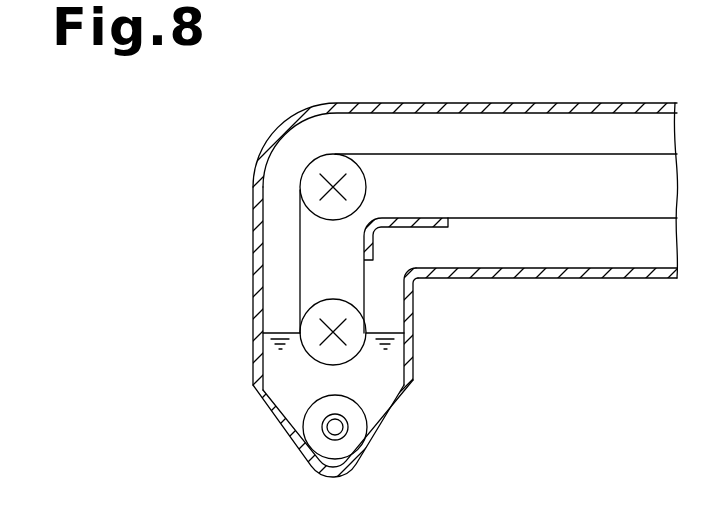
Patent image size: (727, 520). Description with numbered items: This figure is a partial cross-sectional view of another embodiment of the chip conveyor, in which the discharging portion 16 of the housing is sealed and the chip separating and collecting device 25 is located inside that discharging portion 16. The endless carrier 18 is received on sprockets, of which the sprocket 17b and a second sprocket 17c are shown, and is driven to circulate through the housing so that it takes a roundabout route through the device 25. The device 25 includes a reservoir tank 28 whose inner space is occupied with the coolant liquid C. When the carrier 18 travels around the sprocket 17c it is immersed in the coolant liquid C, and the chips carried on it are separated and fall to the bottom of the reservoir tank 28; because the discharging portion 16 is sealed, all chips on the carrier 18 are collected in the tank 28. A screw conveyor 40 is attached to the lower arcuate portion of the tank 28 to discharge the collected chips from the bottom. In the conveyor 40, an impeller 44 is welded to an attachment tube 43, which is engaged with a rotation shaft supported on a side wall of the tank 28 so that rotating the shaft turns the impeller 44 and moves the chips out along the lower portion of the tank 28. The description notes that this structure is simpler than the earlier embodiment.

The discharging portion 16 is at (620, 103).
The endless carrier 18 is at (492, 153).
The sprocket 17b is at (343, 165).
The lower roller 17c is at (318, 300).
The coolant liquid C is at (387, 333).
The reservoir tank 28 is at (254, 368).
The chip separating and collecting device 25 is at (428, 376).
The screw conveyor 40 is at (280, 448).
The impeller 44 is at (357, 427).
The attachment tube 43 is at (347, 440).